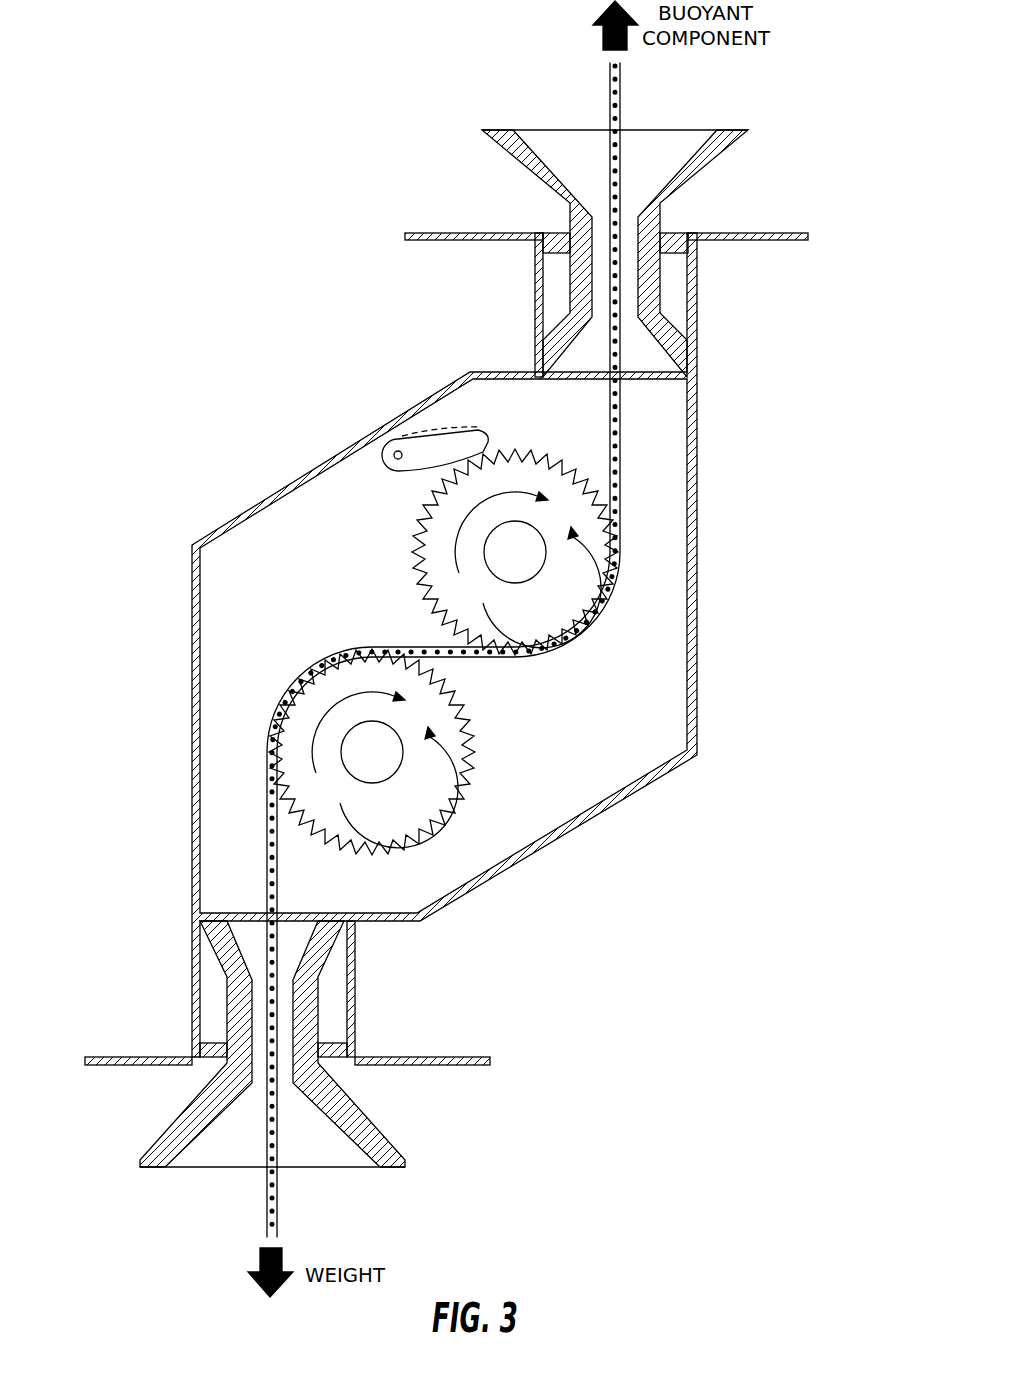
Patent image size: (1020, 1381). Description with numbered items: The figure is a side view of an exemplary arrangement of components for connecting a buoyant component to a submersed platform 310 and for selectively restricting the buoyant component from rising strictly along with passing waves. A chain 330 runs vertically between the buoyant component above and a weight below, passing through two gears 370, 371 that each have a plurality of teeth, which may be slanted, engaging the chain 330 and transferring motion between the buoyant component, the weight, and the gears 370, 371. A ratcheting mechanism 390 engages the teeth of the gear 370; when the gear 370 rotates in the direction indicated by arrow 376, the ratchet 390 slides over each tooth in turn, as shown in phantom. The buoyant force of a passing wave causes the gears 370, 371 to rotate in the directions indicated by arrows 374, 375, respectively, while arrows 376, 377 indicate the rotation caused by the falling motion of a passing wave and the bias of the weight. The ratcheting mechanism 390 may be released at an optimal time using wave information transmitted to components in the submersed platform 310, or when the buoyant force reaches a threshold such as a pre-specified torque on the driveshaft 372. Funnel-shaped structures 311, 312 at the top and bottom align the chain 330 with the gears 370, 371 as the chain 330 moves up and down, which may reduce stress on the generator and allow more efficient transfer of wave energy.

The submersed platform 310 is at (262, 313).
The funnel-shaped structure 311 is at (693, 128).
The funnel-shaped structure 312 is at (338, 1172).
The chain 330 is at (622, 413).
The gear 370 is at (420, 553).
The gear 371 is at (323, 686).
The driveshaft 372 is at (502, 570).
The arrow 374 is at (555, 600).
The arrow 375 is at (320, 733).
The arrow 376 is at (457, 519).
The arrow 377 is at (422, 792).
The ratcheting mechanism 390 is at (455, 428).